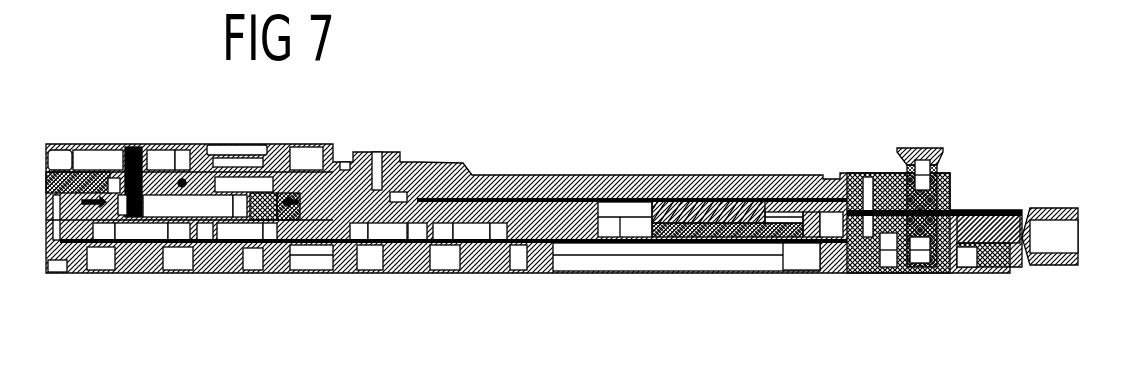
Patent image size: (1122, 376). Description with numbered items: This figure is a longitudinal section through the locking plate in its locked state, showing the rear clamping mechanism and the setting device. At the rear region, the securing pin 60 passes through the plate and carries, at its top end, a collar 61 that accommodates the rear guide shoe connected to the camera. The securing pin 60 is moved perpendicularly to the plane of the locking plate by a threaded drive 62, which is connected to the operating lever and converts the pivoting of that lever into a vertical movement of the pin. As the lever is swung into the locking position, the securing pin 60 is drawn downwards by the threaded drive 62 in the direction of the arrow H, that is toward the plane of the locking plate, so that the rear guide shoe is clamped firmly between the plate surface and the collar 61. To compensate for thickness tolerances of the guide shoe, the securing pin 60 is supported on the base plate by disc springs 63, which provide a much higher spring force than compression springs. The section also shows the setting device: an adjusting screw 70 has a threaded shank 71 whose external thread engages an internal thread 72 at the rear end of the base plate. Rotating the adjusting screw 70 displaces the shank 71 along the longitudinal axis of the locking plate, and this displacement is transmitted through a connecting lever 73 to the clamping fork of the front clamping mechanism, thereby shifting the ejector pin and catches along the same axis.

The securing pin 60 is at (900, 152).
The collar 61 is at (1012, 107).
The threaded drive 62 is at (968, 308).
The disc springs 63 is at (892, 270).
The adjusting screw 70 is at (1063, 170).
The threaded shank 71 is at (1010, 316).
The internal thread 72 is at (1022, 160).
The connecting lever 73 is at (712, 197).
The arrow H is at (948, 105).